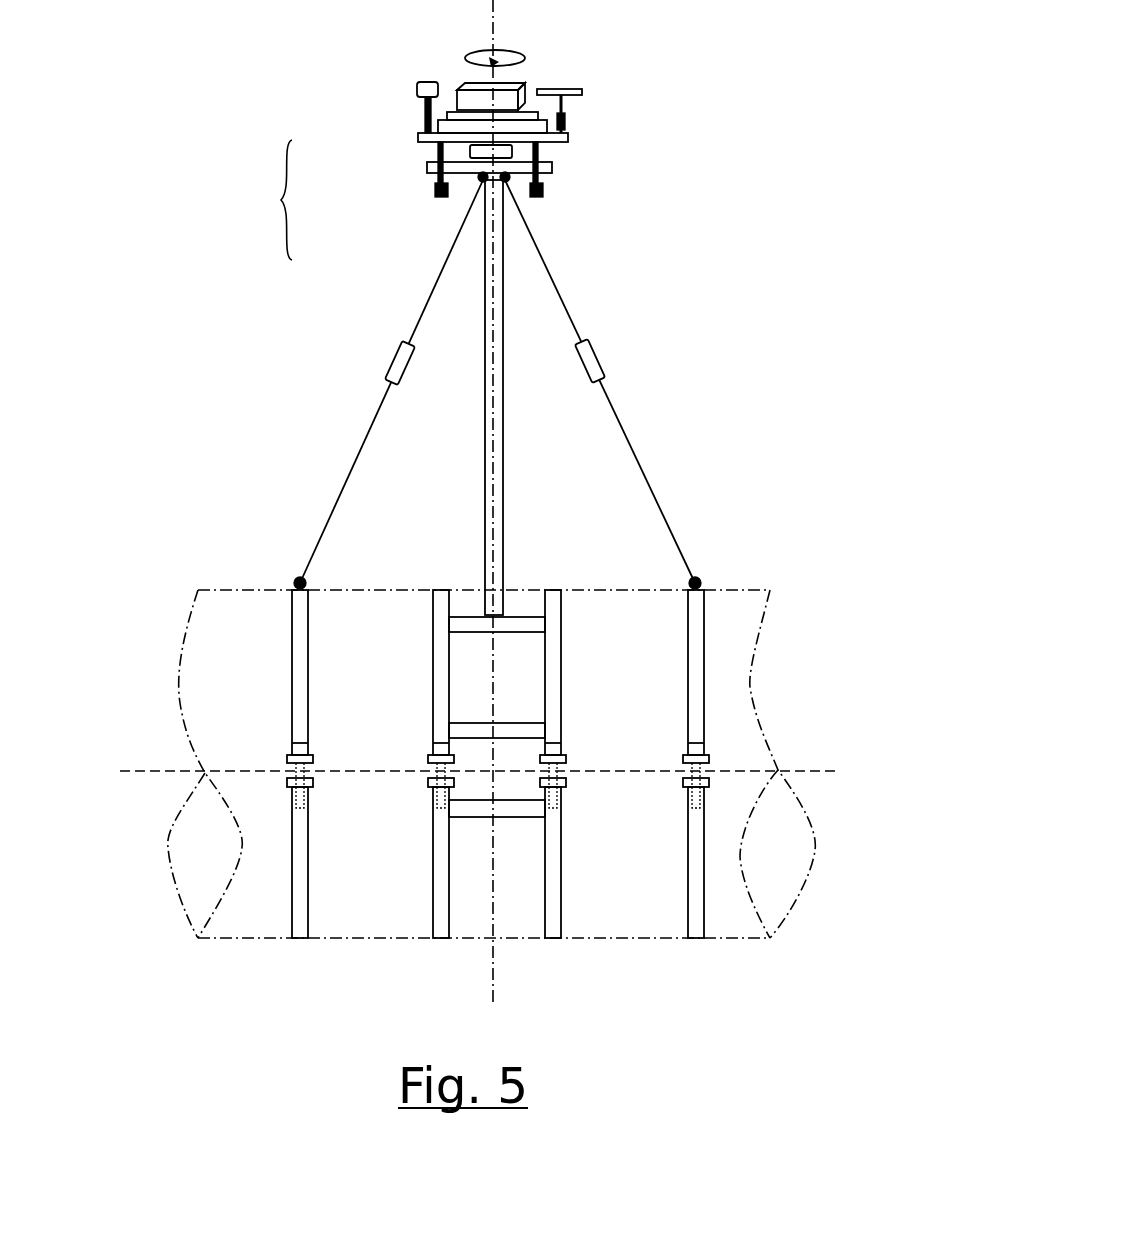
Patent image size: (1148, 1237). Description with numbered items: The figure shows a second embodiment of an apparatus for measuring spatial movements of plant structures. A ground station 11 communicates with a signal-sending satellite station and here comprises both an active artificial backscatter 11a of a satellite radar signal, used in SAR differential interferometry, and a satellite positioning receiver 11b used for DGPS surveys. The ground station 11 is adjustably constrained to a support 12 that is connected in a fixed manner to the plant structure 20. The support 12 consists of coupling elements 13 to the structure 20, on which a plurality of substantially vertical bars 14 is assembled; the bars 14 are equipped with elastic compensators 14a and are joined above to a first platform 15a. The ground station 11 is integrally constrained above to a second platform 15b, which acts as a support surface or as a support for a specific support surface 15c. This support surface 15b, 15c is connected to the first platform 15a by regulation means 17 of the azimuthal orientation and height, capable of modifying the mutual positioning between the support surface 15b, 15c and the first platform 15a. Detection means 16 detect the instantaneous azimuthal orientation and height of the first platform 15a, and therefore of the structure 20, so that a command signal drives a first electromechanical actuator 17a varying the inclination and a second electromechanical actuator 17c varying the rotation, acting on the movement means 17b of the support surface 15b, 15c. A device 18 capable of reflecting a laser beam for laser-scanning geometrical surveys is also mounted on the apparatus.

The ground station 11 is at (268, 90).
The artificial backscatter 11a is at (523, 85).
The satellite positioning receiver 11b is at (585, 91).
The support 12 is at (648, 323).
The coupling elements 13 is at (674, 651).
The vertical bars 14 is at (485, 462).
The elastic compensators 14a is at (631, 443).
The first platform 15a is at (508, 183).
The second platform 15b is at (568, 141).
The support surface 15c is at (540, 128).
The detection means 16 is at (520, 165).
The regulation means 17 is at (273, 200).
The first electromechanical actuator 17a is at (428, 192).
The movement means 17b is at (440, 151).
The second electromechanical actuator 17c is at (484, 131).
The laser beam reflecting device 18 is at (418, 86).
The plant structure 20 is at (215, 620).